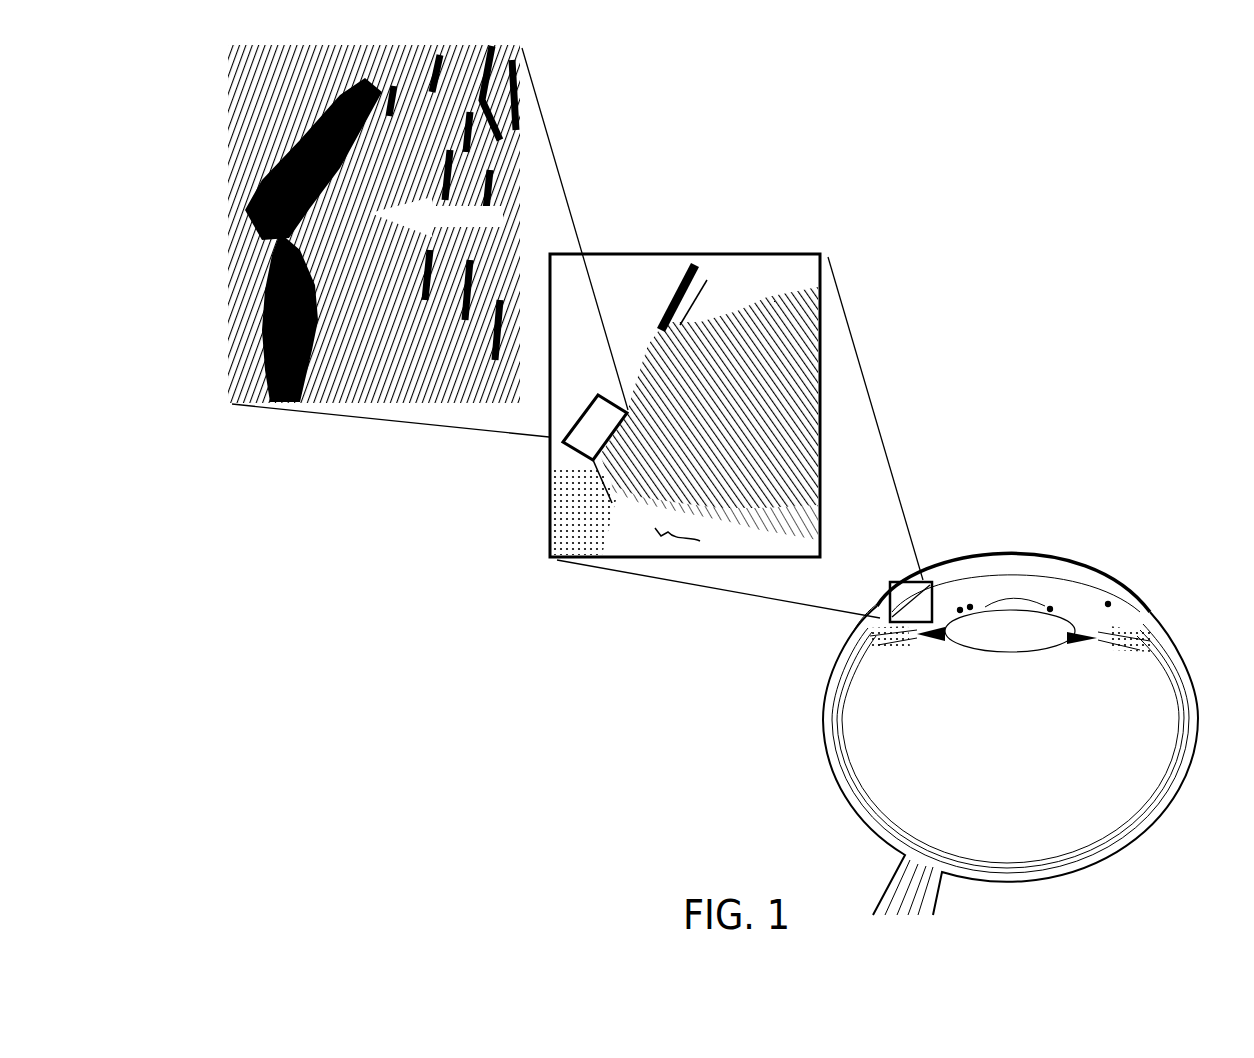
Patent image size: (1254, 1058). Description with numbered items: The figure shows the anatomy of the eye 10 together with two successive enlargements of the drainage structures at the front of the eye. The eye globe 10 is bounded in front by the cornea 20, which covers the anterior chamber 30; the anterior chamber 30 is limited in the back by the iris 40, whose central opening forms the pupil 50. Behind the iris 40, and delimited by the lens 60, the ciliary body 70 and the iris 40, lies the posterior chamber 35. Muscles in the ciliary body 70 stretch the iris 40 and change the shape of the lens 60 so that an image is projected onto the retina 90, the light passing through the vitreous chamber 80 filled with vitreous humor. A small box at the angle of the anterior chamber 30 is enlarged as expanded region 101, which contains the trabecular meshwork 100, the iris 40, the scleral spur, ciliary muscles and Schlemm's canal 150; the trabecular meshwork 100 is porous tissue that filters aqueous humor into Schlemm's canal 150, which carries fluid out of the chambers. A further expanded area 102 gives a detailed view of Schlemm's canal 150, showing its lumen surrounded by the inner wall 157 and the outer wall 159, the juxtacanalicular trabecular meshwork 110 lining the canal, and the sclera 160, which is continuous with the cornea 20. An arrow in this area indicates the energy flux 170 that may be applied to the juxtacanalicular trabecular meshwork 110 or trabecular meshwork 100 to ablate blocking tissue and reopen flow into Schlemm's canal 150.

The eye 10 is at (825, 702).
The cornea 20 is at (1037, 560).
The anterior chamber 30 is at (965, 582).
The posterior chamber 35 is at (945, 623).
The iris 40 is at (706, 535).
The pupil 50 is at (1013, 597).
The lens 60 is at (1050, 642).
The ciliary body 70 is at (872, 624).
The vitreous chamber 80 is at (1153, 750).
The retina 90 is at (893, 830).
The trabecular meshwork 100 is at (700, 352).
The expanded region 101 is at (757, 367).
The further expanded area 102 is at (408, 403).
The juxtacanalicular trabecular meshwork 110 is at (410, 174).
The Schlemm's canal 150 is at (290, 340).
The inner wall 157 is at (293, 224).
The outer wall 159 is at (248, 150).
The sclera 160 is at (247, 82).
The energy flux 170 is at (436, 225).